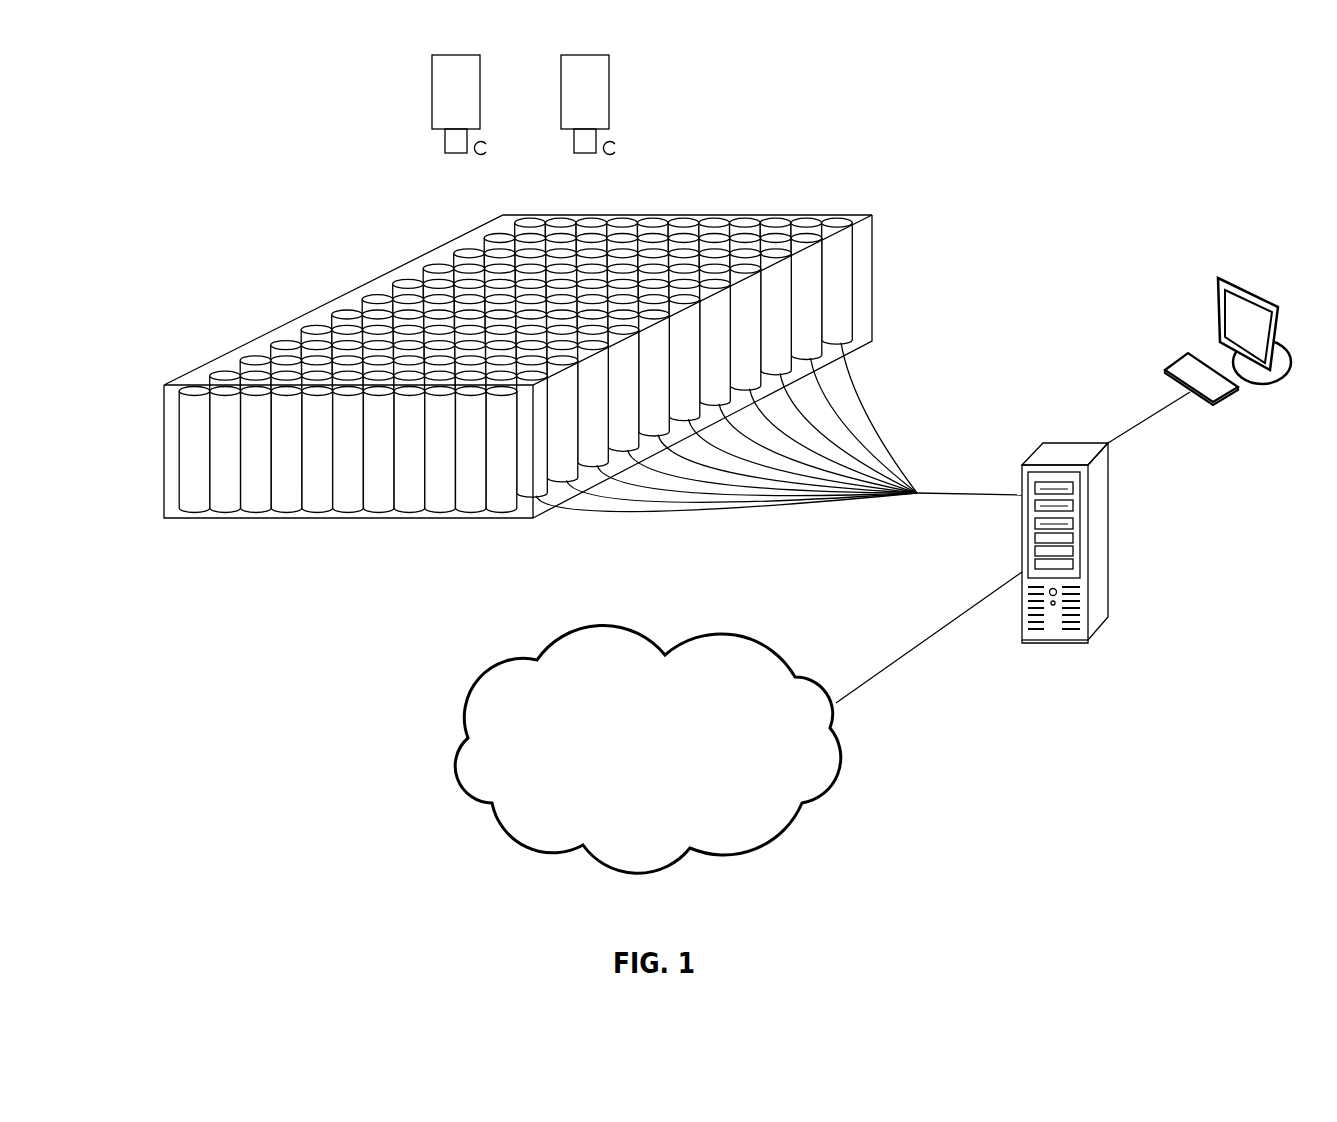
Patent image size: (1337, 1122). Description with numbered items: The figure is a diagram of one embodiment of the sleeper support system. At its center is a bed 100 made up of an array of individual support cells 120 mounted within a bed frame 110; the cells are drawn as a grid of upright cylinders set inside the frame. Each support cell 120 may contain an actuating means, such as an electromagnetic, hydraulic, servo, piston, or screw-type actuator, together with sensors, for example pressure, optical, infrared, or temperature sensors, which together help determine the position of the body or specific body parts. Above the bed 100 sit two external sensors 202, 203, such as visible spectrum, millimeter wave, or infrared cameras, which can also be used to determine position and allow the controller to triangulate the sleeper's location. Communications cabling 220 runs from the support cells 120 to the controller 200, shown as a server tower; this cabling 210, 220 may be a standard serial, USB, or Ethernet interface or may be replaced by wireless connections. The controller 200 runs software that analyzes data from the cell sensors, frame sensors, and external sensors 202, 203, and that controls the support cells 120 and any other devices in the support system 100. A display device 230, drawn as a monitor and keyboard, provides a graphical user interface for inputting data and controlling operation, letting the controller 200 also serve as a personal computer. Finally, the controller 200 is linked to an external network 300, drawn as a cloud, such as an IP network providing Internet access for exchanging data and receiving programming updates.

The bed 100 is at (535, 354).
The bed frame 110 is at (205, 368).
The support cells 120 is at (317, 512).
The controller 200 is at (1065, 542).
The external sensor 202 is at (432, 113).
The external sensor 203 is at (609, 98).
The communications cabling 210 is at (1199, 360).
The communications cabling 220 is at (779, 427).
The display device 230 is at (929, 637).
The external network 300 is at (622, 749).